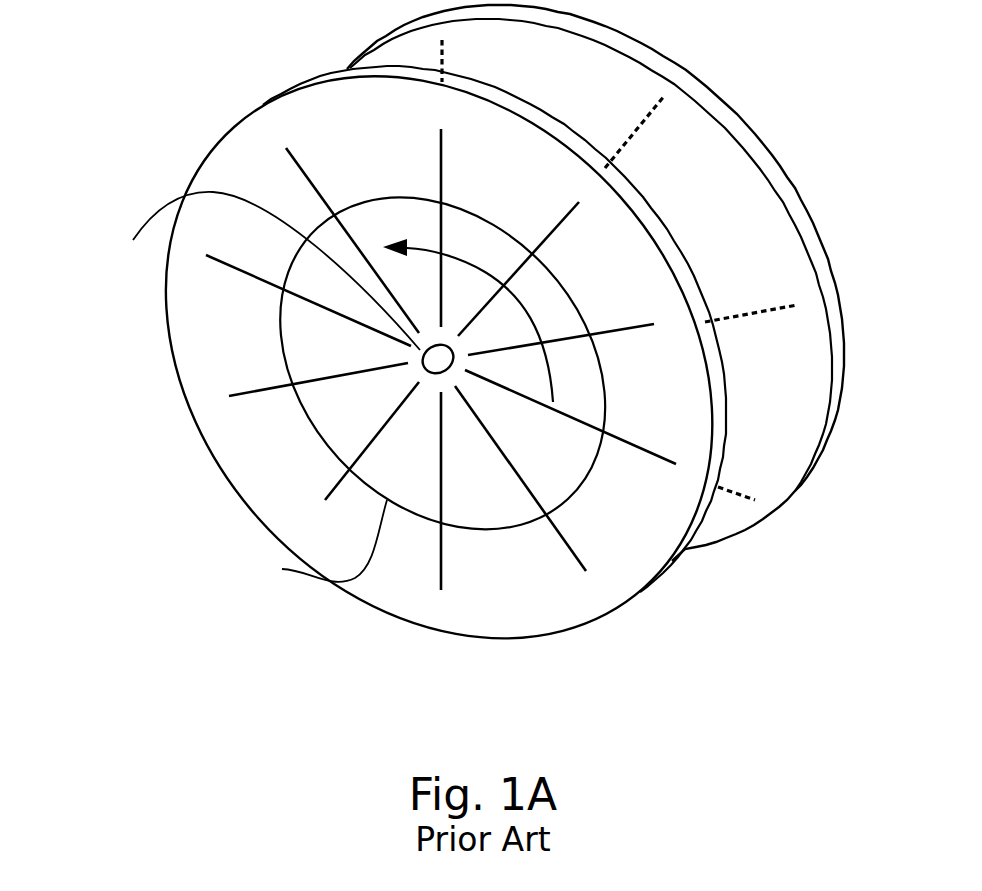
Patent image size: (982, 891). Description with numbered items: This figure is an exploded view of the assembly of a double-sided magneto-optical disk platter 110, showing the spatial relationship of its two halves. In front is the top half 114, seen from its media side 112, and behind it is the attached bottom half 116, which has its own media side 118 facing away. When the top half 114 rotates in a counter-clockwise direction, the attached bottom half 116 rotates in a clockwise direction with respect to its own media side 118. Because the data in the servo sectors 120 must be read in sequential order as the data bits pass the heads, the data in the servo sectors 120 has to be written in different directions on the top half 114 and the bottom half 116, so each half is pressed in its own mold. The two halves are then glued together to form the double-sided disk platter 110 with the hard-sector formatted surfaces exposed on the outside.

The double-sided MO disk platter 110 is at (481, 374).
The media side 112 is at (315, 120).
The top half 114 is at (225, 132).
The bottom half 116 is at (728, 116).
The media side 118 is at (798, 188).
The servo sectors 120 is at (348, 378).